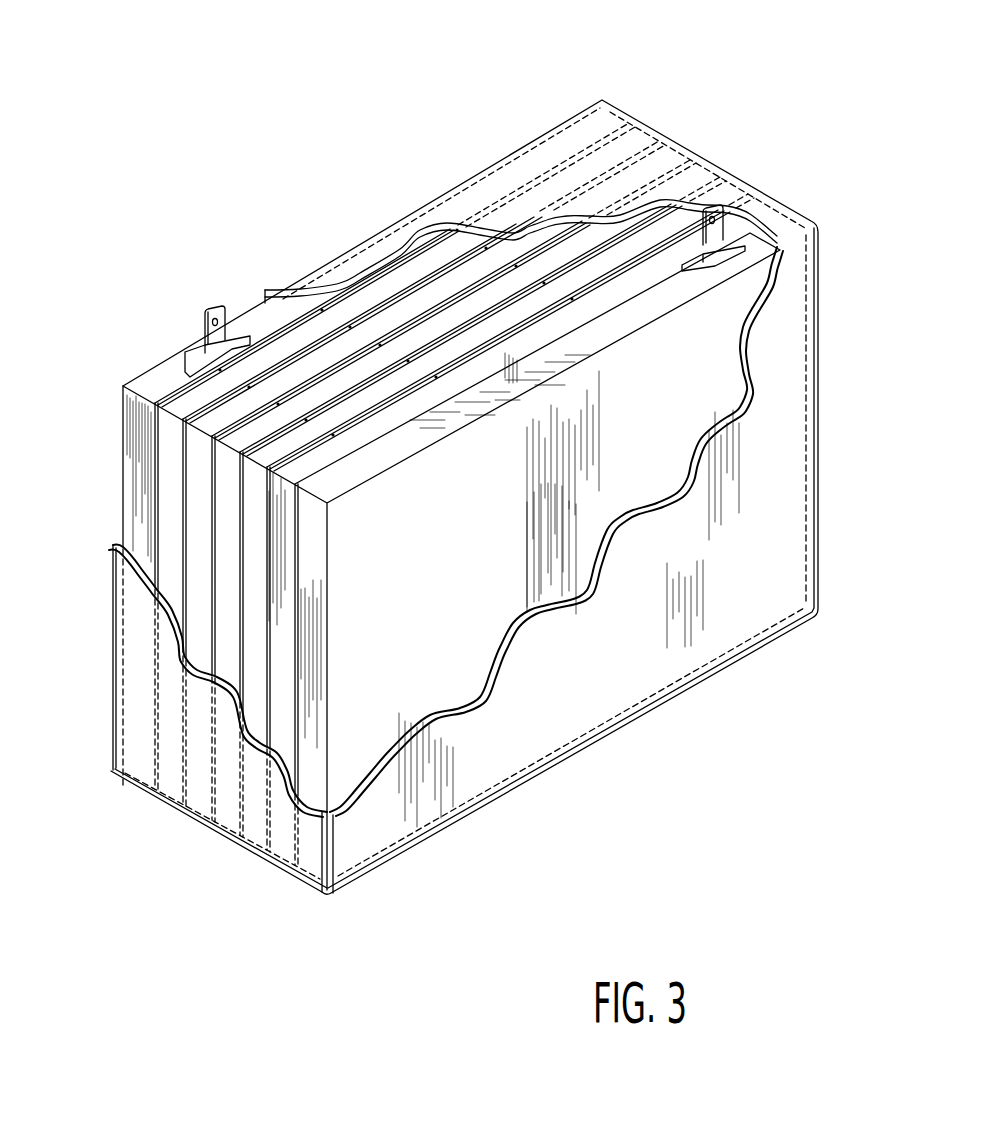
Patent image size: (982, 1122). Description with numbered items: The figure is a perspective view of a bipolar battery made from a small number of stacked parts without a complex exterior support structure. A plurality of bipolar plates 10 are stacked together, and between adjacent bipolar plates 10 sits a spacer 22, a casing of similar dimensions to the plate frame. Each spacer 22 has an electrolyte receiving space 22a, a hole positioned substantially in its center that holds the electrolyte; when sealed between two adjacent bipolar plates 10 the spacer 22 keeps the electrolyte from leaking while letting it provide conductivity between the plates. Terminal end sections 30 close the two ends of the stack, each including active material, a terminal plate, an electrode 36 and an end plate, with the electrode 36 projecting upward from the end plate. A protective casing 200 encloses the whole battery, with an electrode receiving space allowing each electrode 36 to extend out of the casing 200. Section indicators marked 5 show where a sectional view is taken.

The protective casing 200 is at (815, 220).
The terminal end section 30 is at (121, 371).
The bipolar plate 10 is at (247, 540).
The spacer 22 is at (263, 437).
The electrolyte receiving space 22a is at (513, 260).
The electrode 36 is at (215, 310).
The section line 5- 5 is at (197, 315).